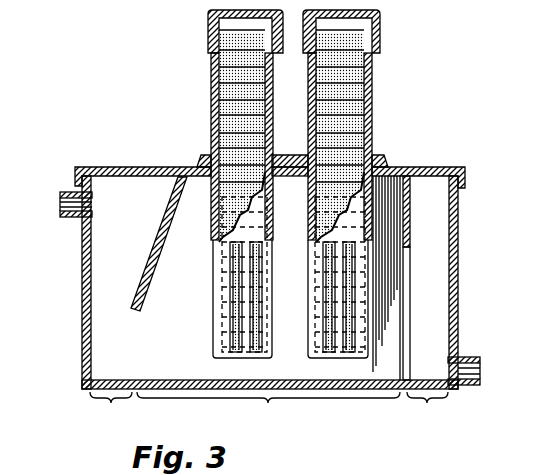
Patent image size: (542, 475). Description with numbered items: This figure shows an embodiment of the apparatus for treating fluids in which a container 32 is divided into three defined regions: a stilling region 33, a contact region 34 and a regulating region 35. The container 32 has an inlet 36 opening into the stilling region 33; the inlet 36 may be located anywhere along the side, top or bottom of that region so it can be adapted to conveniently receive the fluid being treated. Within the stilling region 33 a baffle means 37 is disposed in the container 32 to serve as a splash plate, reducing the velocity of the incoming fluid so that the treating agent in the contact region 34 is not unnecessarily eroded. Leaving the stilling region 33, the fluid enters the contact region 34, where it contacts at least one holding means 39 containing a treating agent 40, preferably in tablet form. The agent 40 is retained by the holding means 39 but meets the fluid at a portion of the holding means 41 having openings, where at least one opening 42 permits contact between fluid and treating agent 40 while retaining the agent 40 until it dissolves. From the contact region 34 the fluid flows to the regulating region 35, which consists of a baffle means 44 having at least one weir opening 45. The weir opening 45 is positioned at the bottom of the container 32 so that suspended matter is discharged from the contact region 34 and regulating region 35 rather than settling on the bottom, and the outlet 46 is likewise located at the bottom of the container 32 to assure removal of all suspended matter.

The container 32 is at (458, 290).
The stilling region 33 is at (111, 410).
The contact region 34 is at (268, 410).
The regulating region 35 is at (427, 411).
The inlet 36 is at (72, 219).
The baffle means 37 is at (163, 218).
The holding means 39 is at (363, 126).
The treating agent 40 is at (338, 123).
The portion of the holding means having openings 41 is at (221, 286).
The opening 42 is at (232, 351).
The baffle means 44 is at (410, 226).
The weir opening 45 is at (406, 272).
The outlet 46 is at (474, 357).